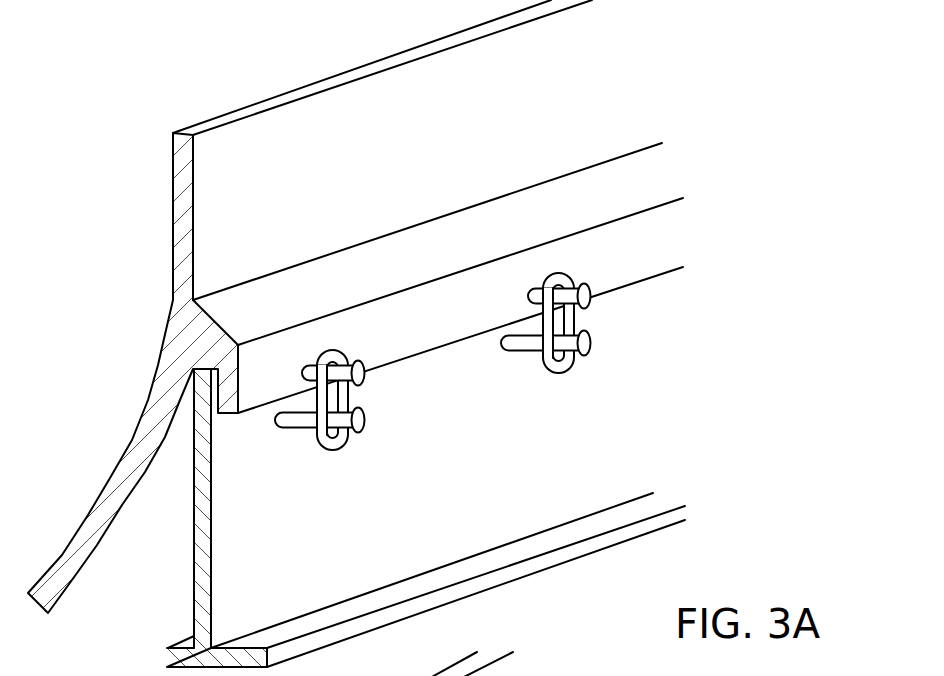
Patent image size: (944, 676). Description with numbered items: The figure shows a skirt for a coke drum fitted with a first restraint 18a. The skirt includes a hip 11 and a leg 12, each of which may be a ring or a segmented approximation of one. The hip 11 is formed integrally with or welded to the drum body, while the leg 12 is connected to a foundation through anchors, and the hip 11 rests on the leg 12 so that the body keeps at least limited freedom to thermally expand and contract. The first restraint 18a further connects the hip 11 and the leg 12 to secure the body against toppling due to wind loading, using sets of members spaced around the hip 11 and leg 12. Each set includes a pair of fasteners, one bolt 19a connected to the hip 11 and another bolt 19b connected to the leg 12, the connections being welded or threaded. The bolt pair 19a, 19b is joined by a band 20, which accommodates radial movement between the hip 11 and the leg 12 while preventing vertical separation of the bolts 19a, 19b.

The hip 11 is at (221, 329).
The leg 12 is at (194, 563).
The first restraint 18a is at (511, 457).
The bolt 19a is at (358, 373).
The bolt 19b is at (363, 422).
The band 20 is at (318, 440).